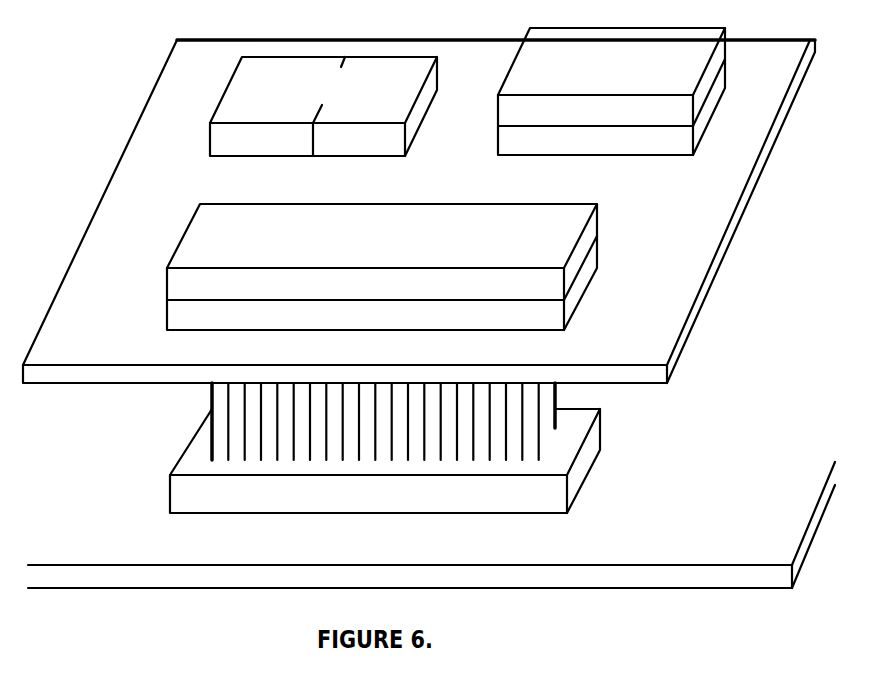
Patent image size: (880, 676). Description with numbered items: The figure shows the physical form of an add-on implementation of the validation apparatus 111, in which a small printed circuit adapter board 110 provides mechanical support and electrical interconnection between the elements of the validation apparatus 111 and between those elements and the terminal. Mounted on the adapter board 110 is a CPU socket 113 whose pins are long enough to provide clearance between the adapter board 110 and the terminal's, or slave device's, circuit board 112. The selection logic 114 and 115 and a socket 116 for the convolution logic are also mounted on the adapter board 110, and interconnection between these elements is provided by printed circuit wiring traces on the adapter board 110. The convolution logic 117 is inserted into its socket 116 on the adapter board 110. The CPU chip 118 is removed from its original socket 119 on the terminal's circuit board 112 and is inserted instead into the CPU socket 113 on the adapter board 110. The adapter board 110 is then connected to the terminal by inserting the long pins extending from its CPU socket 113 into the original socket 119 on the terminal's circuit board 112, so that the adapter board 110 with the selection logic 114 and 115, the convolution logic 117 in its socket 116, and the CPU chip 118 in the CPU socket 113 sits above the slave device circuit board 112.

The adapter board 110 is at (782, 262).
The validation apparatus 111 is at (138, 113).
The circuit board 112 is at (615, 592).
The CPU socket 113 is at (167, 322).
The selection logic 114 is at (230, 82).
The selection logic 115 is at (420, 123).
The socket 116 is at (713, 128).
The convolution logic 117 is at (727, 50).
The CPU chip 118 is at (198, 208).
The original socket 119 is at (170, 488).